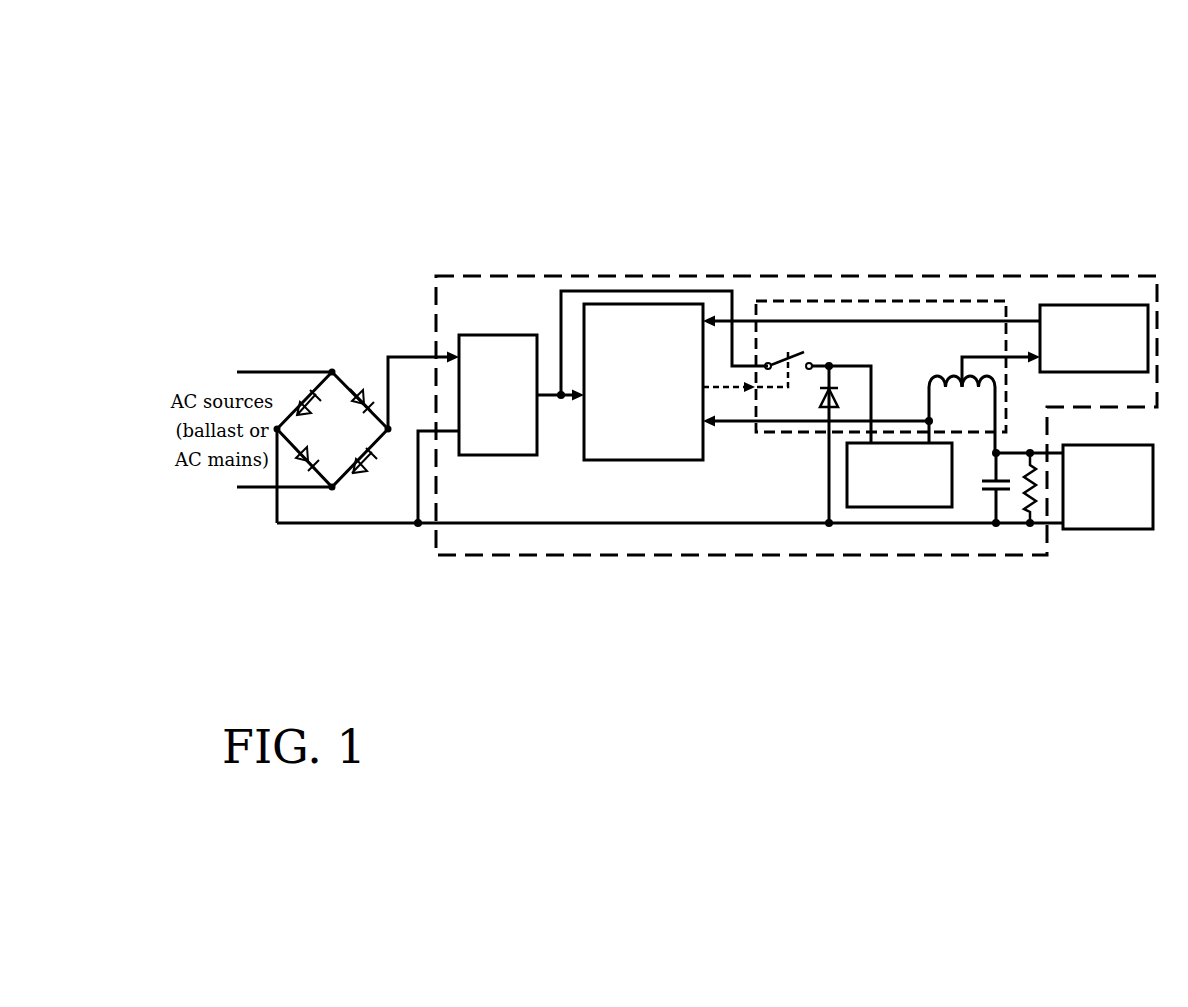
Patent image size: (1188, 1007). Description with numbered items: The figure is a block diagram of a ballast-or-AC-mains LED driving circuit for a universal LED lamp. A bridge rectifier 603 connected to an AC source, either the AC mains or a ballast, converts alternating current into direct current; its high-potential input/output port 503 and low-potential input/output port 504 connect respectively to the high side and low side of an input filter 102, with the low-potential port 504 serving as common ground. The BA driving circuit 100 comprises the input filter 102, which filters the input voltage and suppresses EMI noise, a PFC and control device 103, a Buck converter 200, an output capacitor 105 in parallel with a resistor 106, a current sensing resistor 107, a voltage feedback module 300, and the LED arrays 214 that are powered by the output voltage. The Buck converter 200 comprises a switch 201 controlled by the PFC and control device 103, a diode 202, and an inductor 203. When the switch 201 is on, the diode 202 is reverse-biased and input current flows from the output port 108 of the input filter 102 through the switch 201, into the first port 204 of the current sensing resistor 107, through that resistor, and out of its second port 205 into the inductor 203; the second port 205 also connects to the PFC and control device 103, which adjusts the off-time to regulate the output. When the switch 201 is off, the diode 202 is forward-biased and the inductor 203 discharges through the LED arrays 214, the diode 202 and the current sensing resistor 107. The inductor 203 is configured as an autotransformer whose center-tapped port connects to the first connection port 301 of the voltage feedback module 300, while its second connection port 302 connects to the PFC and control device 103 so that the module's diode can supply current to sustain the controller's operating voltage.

The BA driving circuit 100 is at (686, 254).
The input filter 102 is at (497, 335).
The PFC and control device 103 is at (643, 304).
The output capacitor 105 is at (984, 496).
The resistor 106 is at (1034, 514).
The current sensing resistor 107 is at (902, 507).
The output port 108 is at (556, 390).
The Buck converter 200 is at (822, 284).
The switch 201 is at (778, 373).
The diode 202 is at (818, 410).
The inductor 203 is at (945, 375).
The first port 204 is at (829, 364).
The second port 205 is at (918, 412).
The LED arrays 214 is at (1113, 533).
The voltage feedback module 300 is at (1098, 305).
The first connection port 301 is at (1021, 356).
The second connection port 302 is at (983, 320).
The input/output port 503 is at (415, 353).
The input/output port 504 is at (397, 530).
The bridge rectifier 603 is at (325, 345).